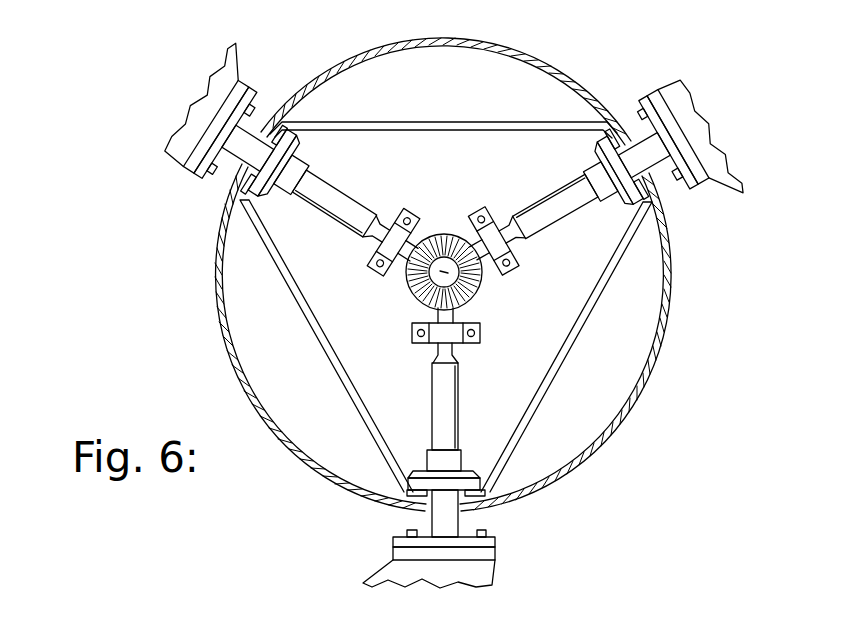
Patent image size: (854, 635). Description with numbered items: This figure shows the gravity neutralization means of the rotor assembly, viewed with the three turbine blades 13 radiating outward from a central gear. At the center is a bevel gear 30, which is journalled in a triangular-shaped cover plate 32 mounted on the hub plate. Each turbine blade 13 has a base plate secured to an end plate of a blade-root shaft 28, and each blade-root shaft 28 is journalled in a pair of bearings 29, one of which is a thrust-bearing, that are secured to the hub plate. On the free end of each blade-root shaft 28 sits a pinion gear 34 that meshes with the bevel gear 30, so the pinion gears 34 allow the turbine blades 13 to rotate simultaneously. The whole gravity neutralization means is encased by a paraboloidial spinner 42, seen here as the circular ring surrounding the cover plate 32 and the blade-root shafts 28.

The turbine blade 13 is at (232, 62).
The blade-root shaft 28 is at (338, 205).
The bearing 29 is at (292, 148).
The bevel gear 30 is at (447, 233).
The triangular-shaped cover plate 32 is at (562, 367).
The pinion gear 34 is at (406, 277).
The paraboloidial spinner 42 is at (655, 370).